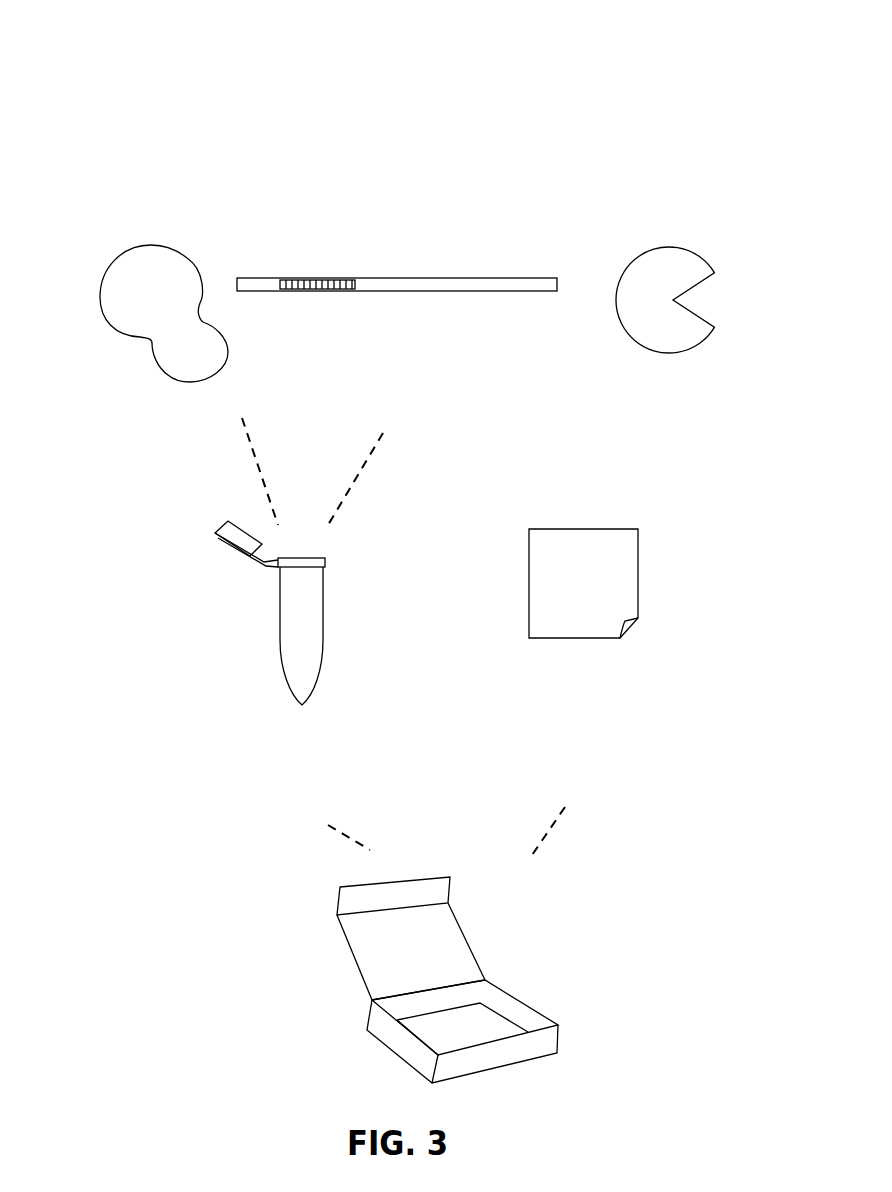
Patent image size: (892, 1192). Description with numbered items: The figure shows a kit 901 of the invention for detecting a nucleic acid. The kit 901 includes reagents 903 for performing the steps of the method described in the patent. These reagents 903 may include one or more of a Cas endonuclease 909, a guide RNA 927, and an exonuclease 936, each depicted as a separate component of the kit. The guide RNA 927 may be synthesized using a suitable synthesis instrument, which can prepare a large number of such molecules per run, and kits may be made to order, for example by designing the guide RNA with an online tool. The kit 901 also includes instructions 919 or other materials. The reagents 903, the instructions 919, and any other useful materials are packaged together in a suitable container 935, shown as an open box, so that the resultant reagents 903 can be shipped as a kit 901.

The kit 901 is at (402, 80).
The Cas endonuclease 909 is at (152, 245).
The guide RNA 927 is at (375, 292).
The exonuclease 936 is at (670, 247).
The reagents 903 is at (280, 615).
The instructions 919 is at (626, 529).
The container 935 is at (558, 1025).